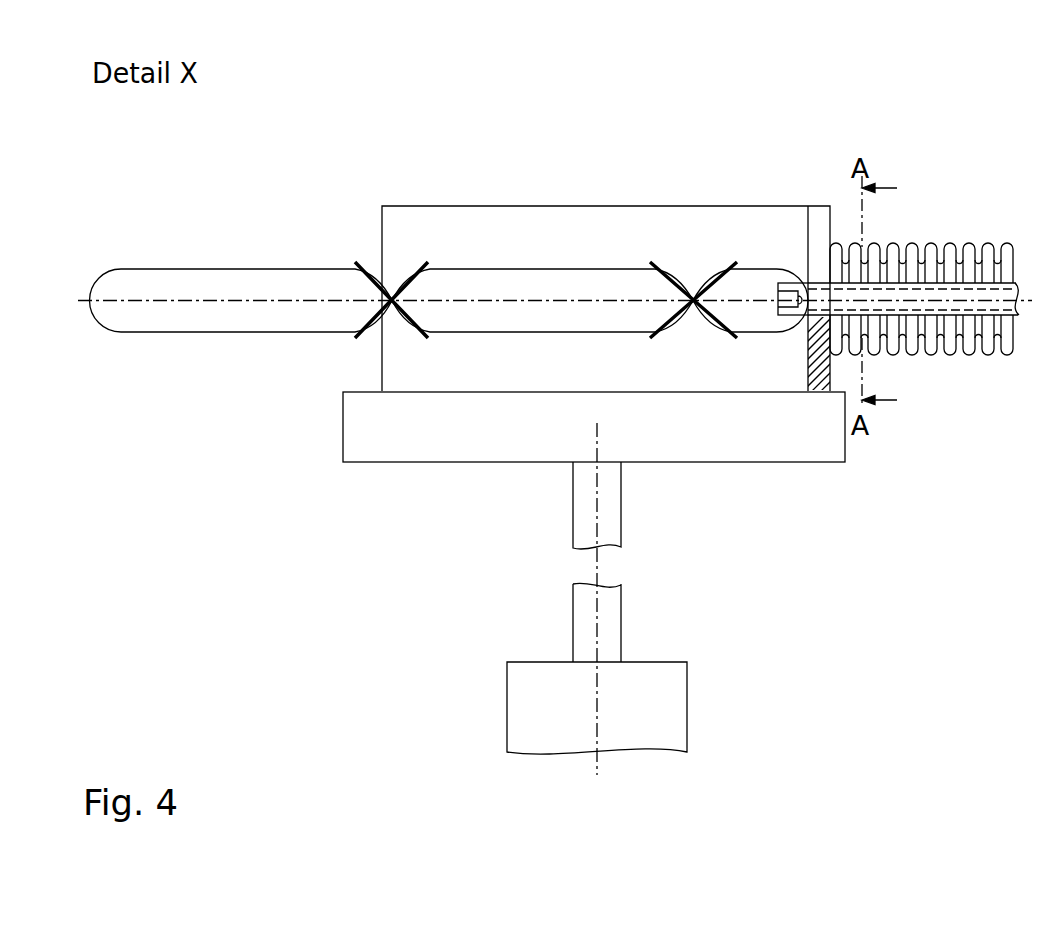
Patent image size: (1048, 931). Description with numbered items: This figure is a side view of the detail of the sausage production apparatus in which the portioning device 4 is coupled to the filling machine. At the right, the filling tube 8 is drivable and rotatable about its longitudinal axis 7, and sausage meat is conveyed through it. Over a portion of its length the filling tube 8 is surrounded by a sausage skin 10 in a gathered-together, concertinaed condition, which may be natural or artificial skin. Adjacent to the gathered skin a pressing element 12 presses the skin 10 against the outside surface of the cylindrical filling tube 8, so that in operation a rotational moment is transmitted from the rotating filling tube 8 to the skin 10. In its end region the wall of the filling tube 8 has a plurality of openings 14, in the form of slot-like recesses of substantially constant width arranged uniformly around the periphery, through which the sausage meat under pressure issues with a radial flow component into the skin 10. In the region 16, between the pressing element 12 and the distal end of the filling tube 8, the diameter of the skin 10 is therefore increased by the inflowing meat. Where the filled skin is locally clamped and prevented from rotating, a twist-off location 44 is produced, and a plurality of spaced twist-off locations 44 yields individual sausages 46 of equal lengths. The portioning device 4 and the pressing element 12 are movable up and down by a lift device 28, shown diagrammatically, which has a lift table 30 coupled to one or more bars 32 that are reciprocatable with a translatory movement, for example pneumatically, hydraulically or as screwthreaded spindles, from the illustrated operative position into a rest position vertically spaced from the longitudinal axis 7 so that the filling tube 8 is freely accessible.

The portioning device 4 is at (328, 603).
The longitudinal axis 7 is at (1005, 296).
The filling tube 8 is at (958, 294).
The sausage skin 10 is at (945, 245).
The pressing element 12 is at (820, 209).
The openings 14 is at (783, 286).
The region 16 is at (800, 268).
The lift device 28 is at (727, 619).
The lift table 30 is at (777, 455).
The bars 32 is at (613, 508).
The twist-off location 44 is at (366, 248).
The sausages 46 is at (516, 277).